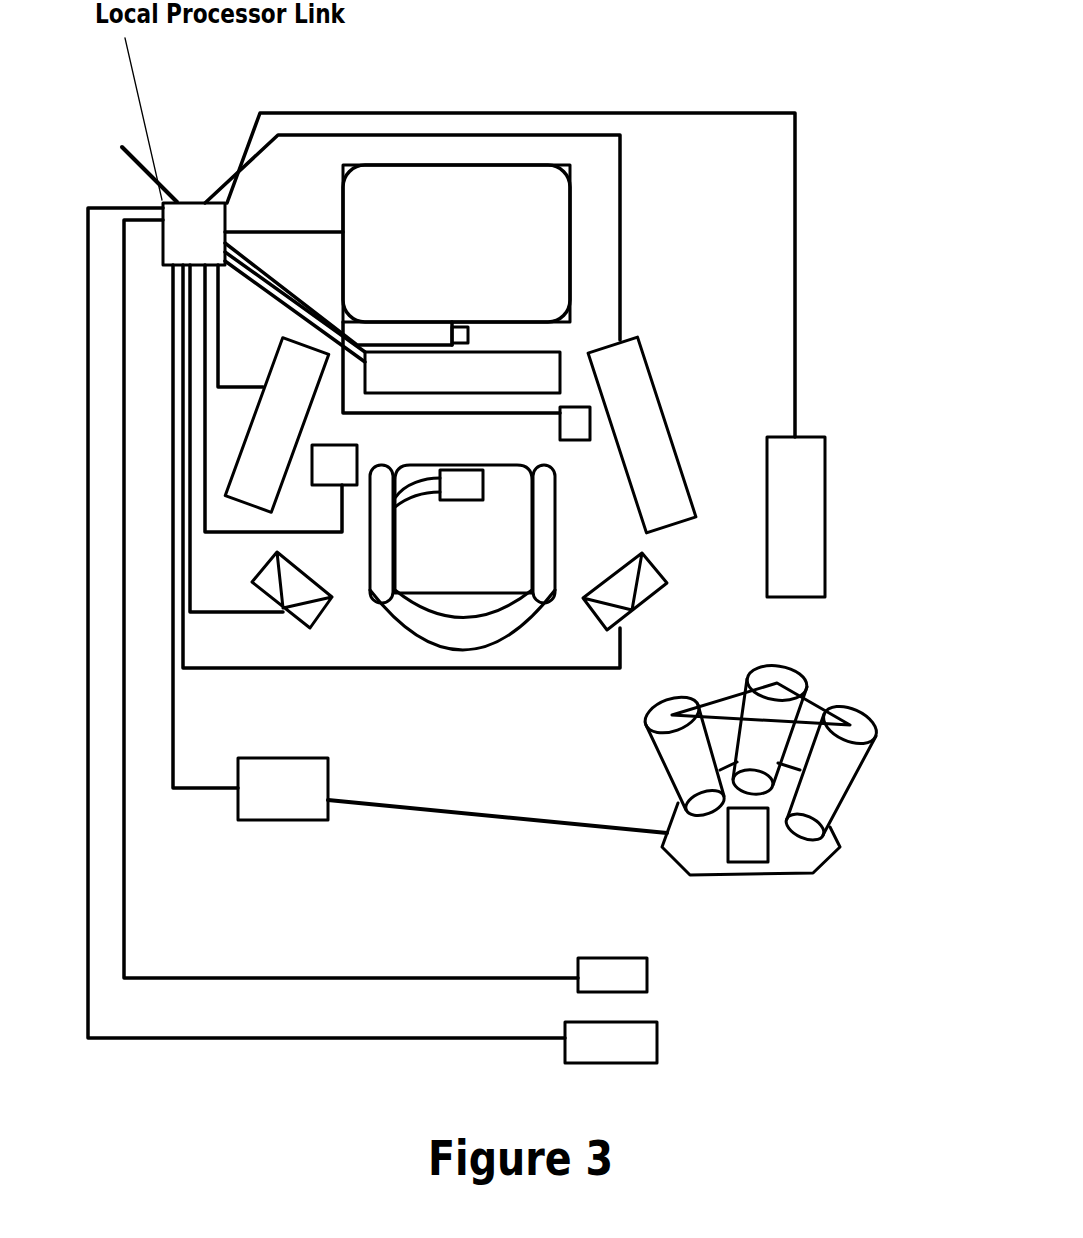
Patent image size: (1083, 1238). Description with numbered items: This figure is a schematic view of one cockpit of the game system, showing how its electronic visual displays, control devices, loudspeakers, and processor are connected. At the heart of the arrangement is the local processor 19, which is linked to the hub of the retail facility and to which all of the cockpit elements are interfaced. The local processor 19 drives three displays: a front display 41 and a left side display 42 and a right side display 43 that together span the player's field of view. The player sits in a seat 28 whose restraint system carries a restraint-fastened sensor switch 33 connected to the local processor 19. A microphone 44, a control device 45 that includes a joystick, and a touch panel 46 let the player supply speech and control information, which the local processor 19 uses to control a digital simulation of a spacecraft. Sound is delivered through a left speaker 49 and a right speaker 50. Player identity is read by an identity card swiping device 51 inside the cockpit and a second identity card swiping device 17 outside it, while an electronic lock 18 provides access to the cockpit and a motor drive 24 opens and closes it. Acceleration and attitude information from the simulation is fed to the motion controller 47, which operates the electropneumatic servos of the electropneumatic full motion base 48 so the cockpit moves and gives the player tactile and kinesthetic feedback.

The second identity card swiping device 17 is at (662, 1037).
The electronic lock 18 is at (648, 970).
The local processor 19 is at (192, 213).
The motor drive 24 is at (833, 500).
The seat 28 is at (502, 655).
The restraint-fastened sensor switch 33 is at (473, 463).
The front display 41 is at (417, 185).
The left side display 42 is at (252, 415).
The right side display 43 is at (672, 412).
The microphone 44 is at (477, 335).
The control device 45 is at (572, 452).
The touch panel 46 is at (550, 350).
The motion controller 47 is at (333, 780).
The electropneumatic full motion base 48 is at (670, 868).
The left speaker 49 is at (250, 570).
The right speaker 50 is at (642, 618).
The identity card swiping device 51 is at (363, 458).